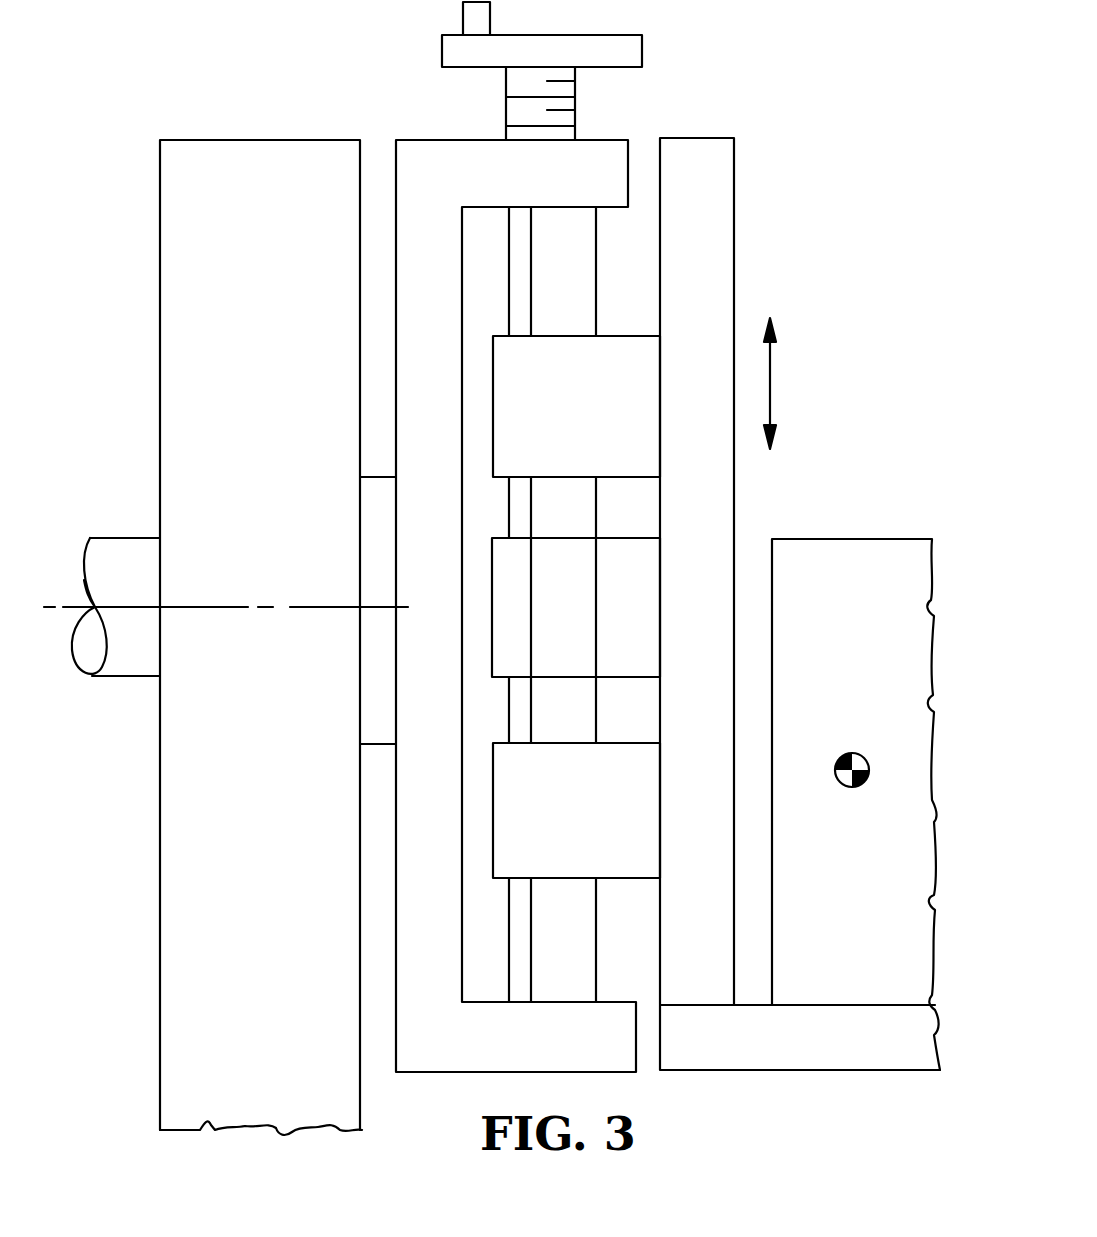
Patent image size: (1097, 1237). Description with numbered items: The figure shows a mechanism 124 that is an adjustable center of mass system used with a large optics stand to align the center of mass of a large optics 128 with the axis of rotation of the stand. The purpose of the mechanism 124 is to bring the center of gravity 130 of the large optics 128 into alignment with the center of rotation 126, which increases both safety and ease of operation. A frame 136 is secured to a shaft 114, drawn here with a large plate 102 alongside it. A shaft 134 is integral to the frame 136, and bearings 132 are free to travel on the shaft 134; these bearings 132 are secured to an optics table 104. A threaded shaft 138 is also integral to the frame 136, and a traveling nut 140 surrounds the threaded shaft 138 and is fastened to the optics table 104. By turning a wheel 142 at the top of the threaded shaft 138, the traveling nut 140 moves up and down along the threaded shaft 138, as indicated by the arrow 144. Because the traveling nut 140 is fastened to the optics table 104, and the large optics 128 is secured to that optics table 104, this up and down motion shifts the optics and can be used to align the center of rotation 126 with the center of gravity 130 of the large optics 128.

The first plate 102 is at (297, 983).
The optics table 104 is at (734, 187).
The shaft 114 is at (130, 676).
The mechanism 124 is at (307, 102).
The center of rotation 126 is at (217, 607).
The large optics 128 is at (855, 539).
The center of gravity 130 is at (862, 753).
The bearing 132 is at (596, 415).
The shaft 134 is at (582, 263).
The frame 136 is at (460, 97).
The threaded shaft 138 is at (575, 108).
The traveling nut 140 is at (640, 580).
The wheel 142 is at (642, 50).
The arrow 144 is at (770, 395).